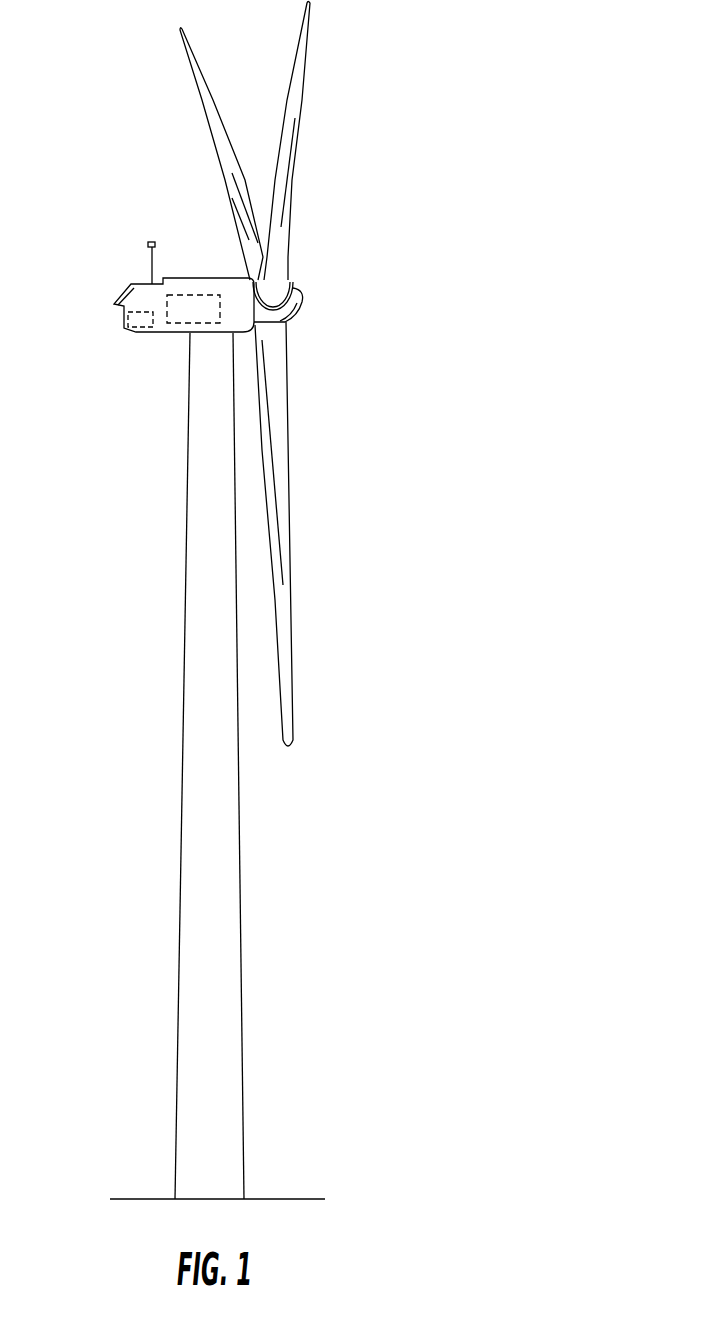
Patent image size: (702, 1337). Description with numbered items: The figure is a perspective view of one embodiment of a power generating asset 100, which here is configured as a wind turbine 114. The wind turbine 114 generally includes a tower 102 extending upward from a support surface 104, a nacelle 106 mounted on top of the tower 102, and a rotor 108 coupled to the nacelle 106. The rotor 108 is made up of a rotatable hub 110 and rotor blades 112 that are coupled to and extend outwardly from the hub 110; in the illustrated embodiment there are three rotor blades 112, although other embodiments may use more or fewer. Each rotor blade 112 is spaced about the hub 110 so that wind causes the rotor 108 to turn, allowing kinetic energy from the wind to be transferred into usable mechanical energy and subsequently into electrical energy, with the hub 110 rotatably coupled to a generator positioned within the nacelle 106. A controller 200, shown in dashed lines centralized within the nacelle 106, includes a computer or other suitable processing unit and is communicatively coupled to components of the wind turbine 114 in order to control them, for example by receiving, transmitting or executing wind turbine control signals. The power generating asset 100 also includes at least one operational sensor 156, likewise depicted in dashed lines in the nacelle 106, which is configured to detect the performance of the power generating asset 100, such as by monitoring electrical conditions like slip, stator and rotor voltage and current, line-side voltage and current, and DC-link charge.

The power generating asset 100 is at (307, 601).
The wind turbine 114 is at (307, 601).
The tower 102 is at (220, 837).
The support surface 104 is at (283, 1199).
The nacelle 106 is at (145, 294).
The rotor 108 is at (313, 374).
The rotatable hub 110 is at (302, 300).
The rotor blade 112 is at (290, 123).
The operational sensor 156 is at (123, 322).
The controller 200 is at (182, 293).